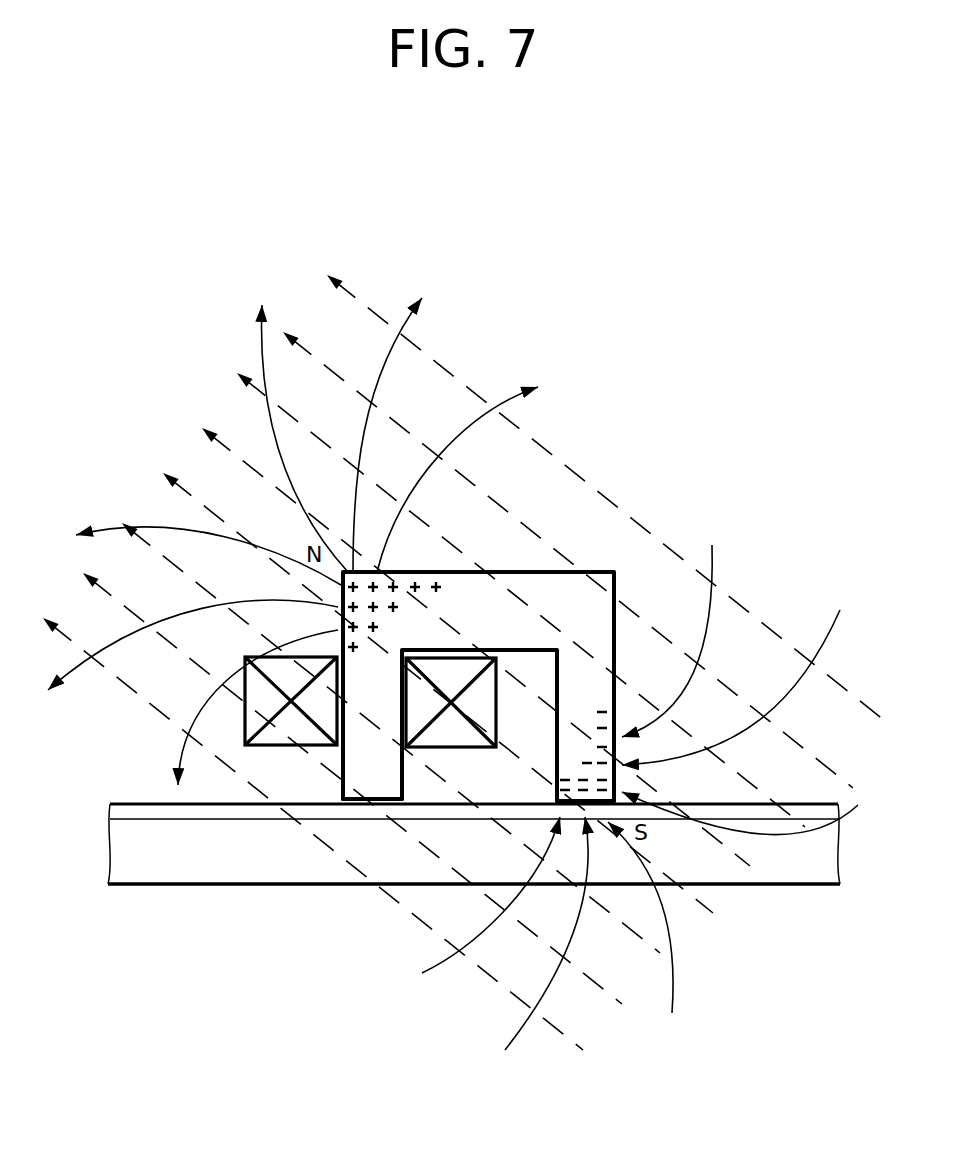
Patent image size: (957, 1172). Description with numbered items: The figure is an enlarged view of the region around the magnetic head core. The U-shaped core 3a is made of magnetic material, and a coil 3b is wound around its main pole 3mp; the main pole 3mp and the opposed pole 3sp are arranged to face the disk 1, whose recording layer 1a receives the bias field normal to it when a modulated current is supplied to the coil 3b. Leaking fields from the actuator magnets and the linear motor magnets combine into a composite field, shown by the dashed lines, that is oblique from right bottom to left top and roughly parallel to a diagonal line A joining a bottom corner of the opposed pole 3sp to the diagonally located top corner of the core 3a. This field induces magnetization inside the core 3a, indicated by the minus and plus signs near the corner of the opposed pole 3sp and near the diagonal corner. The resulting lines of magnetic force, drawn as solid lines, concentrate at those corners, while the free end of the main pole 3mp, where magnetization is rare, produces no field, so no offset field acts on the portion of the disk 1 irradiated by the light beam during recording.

The core 3a is at (473, 590).
The coil 3b is at (245, 695).
The main pole 3mp is at (370, 777).
The opposed pole 3sp is at (618, 786).
The diagonal line A is at (508, 712).
The disk 1 is at (792, 870).
The recording layer 1a is at (773, 820).